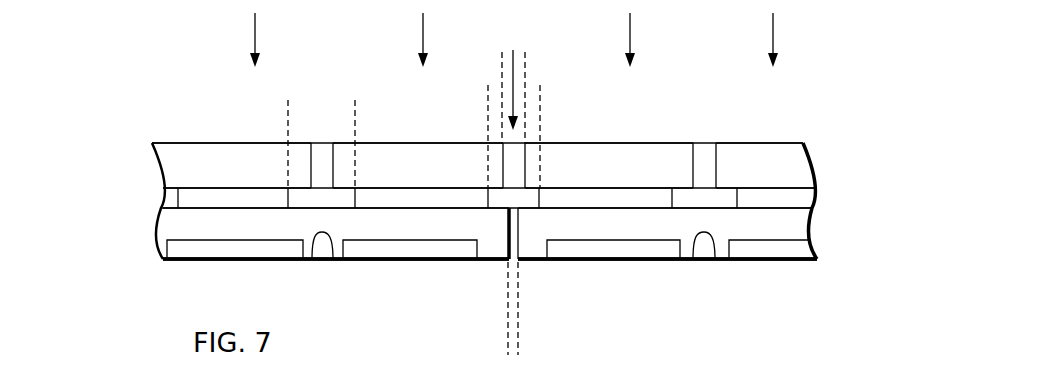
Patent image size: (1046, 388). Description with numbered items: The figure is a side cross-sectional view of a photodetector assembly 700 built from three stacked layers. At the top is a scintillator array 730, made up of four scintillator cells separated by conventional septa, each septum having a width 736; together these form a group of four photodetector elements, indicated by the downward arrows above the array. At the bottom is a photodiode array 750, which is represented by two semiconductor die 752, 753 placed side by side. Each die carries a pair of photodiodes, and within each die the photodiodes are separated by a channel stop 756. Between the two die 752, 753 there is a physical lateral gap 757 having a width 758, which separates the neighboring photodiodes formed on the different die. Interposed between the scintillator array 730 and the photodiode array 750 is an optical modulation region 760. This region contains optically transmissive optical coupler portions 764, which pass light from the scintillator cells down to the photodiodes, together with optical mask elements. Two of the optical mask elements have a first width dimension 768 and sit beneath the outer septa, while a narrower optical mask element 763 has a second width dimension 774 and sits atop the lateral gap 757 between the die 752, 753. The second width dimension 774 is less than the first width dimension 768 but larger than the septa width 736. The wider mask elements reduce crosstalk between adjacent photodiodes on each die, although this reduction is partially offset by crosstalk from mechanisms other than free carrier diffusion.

The photodetector assembly 700 is at (700, 70).
The scintillator array 730 is at (135, 157).
The width of septa 736 is at (576, 66).
The photodiode array 750 is at (135, 238).
The semiconductor die 752 is at (226, 234).
The semiconductor die 753 is at (778, 234).
The channel stop 756 is at (320, 262).
The lateral gap 757 is at (506, 235).
The width of lateral gap 758 is at (572, 317).
The optical modulation region 760 is at (135, 200).
The optical mask element 763 is at (533, 186).
The optical coupler portion 764 is at (258, 186).
The first width dimension 768 is at (410, 105).
The second width dimension 774 is at (430, 100).